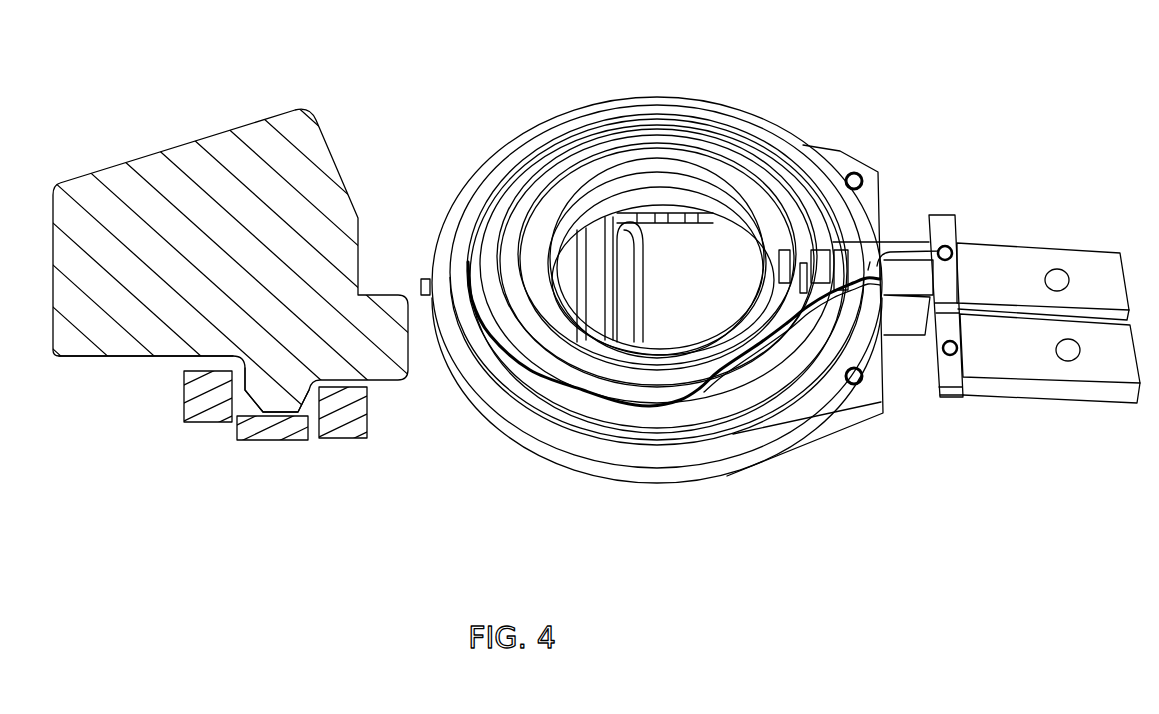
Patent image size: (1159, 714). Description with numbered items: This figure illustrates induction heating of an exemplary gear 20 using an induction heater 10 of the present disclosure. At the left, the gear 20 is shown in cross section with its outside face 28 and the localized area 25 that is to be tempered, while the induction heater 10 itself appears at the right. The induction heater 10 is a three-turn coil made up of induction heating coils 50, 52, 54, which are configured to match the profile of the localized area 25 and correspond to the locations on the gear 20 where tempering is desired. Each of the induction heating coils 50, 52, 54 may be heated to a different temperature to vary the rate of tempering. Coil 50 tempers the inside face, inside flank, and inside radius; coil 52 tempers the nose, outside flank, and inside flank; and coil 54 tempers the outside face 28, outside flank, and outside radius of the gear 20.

The induction heater 10 is at (813, 72).
The gear 20 is at (165, 98).
The localized area 25 is at (232, 415).
The outside face 28 is at (98, 357).
The induction heating coil 50 is at (358, 410).
The induction heating coil 52 is at (277, 433).
The induction heating coil 54 is at (193, 398).